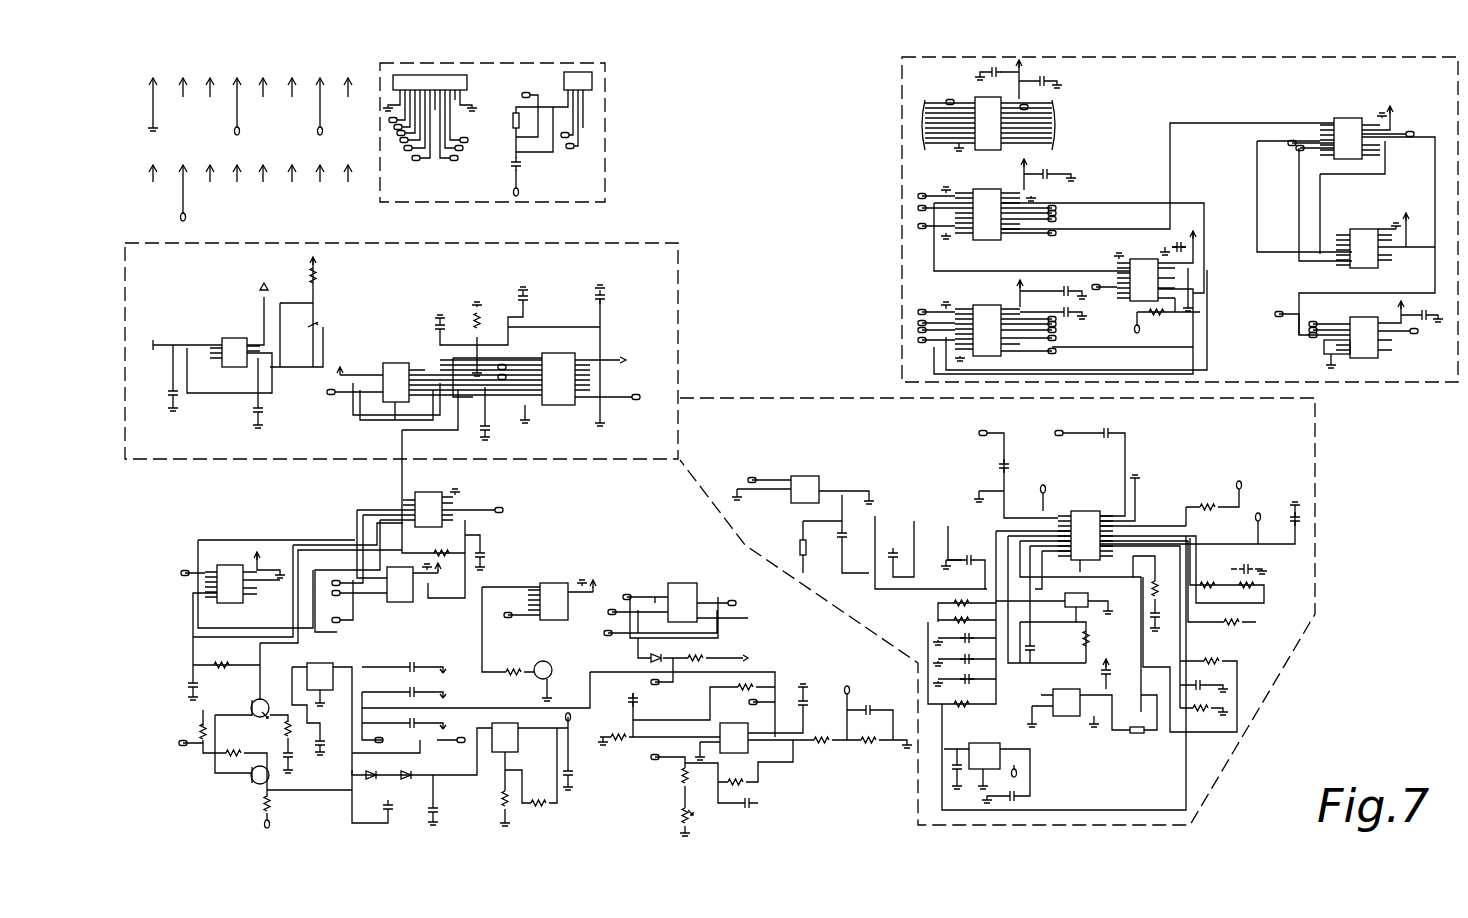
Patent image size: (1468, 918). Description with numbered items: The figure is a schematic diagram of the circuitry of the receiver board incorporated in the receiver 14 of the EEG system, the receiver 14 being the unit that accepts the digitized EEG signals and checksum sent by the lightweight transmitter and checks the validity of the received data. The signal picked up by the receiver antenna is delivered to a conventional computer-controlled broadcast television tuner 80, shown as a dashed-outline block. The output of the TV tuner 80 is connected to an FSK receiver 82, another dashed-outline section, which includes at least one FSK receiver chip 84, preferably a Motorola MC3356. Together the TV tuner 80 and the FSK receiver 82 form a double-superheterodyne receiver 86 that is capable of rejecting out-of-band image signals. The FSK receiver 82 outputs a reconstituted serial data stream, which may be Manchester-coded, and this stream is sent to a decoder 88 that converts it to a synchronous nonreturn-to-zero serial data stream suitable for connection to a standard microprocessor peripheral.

The receiver 14 is at (839, 35).
The television tuner 80 is at (470, 60).
The FSK receiver 82 is at (725, 396).
The FSK receiver chip 84 is at (1083, 510).
The double-superheterodyne receiver 86 is at (698, 195).
The decoder 88 is at (305, 228).